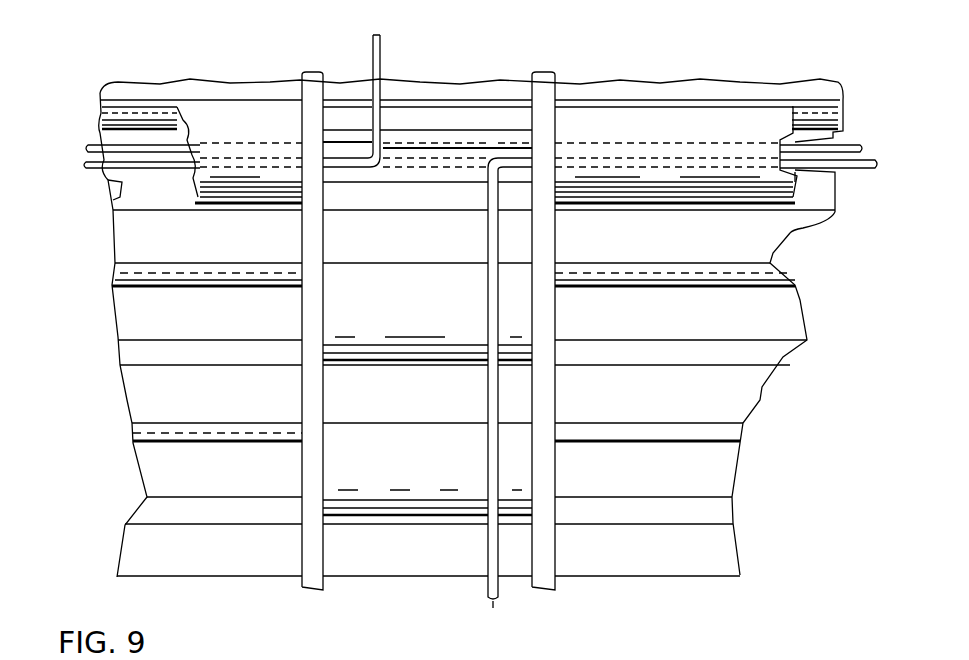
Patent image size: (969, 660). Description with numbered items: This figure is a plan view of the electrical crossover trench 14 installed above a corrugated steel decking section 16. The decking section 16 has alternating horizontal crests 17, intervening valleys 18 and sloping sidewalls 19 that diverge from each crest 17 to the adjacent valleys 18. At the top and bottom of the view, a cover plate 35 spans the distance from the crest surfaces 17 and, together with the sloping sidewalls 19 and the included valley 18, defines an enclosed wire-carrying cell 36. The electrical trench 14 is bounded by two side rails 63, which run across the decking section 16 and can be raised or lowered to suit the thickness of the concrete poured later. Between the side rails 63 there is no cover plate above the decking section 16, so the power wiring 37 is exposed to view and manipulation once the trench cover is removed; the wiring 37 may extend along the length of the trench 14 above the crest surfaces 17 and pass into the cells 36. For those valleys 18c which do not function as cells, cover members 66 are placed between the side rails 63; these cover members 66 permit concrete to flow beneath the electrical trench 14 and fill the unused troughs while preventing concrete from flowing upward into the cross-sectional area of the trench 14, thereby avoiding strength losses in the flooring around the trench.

The electrical crossover trench 14 is at (450, 73).
The corrugated steel decking section 16 is at (102, 357).
The horizontal crest 17 is at (762, 85).
The valley 18 is at (882, 157).
The valley not functioning as a cell 18c is at (793, 317).
The sloping sidewall 19 is at (837, 115).
The cover plate 35 is at (243, 117).
The enclosed cell 36 is at (98, 122).
The power wiring 37 is at (380, 60).
The side rail 63 is at (313, 83).
The cover member 66 is at (442, 316).